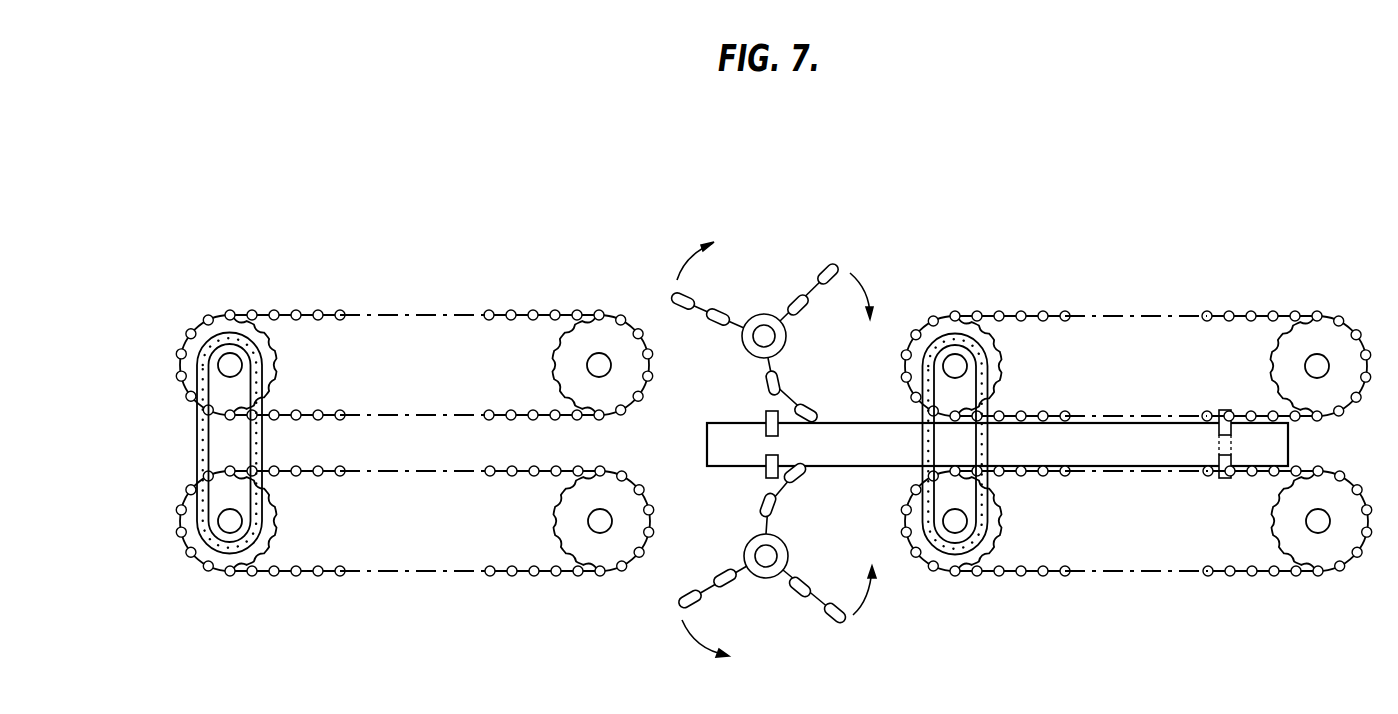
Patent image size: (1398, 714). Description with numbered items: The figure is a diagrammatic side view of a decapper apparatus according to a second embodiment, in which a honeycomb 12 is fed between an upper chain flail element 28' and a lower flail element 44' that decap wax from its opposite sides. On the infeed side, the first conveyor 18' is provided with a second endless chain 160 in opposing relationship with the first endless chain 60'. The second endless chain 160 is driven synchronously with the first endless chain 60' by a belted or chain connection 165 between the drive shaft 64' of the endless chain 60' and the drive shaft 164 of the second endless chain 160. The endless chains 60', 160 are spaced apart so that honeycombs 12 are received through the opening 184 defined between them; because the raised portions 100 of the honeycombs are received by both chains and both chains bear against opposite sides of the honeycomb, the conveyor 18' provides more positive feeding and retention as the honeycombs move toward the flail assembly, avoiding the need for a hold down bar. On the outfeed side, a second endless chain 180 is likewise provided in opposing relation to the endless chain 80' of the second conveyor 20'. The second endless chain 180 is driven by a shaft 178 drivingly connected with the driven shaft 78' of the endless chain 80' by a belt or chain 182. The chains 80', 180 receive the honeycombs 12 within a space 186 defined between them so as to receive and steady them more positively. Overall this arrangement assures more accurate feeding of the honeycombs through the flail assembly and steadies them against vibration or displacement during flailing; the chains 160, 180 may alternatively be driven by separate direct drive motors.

The honeycomb 12 is at (880, 456).
The first conveyor 18' is at (1136, 447).
The second conveyor 20' is at (414, 449).
The upper chain flail element 28' is at (771, 333).
The lower flail element 44' is at (776, 559).
The first endless chain 60' is at (1192, 547).
The drive shaft 64' is at (985, 521).
The driven shaft 78' is at (260, 521).
The endless chain 80' is at (497, 544).
The raised portions 100 is at (1225, 478).
The second endless chain 160 is at (1196, 316).
The drive shaft 164 is at (955, 366).
The belted or chain connection 165 is at (987, 433).
The shaft 178 is at (230, 365).
The second endless chain 180 is at (528, 315).
The belt or chain 182 is at (262, 437).
The opening 184 is at (1306, 442).
The space 186 is at (600, 437).